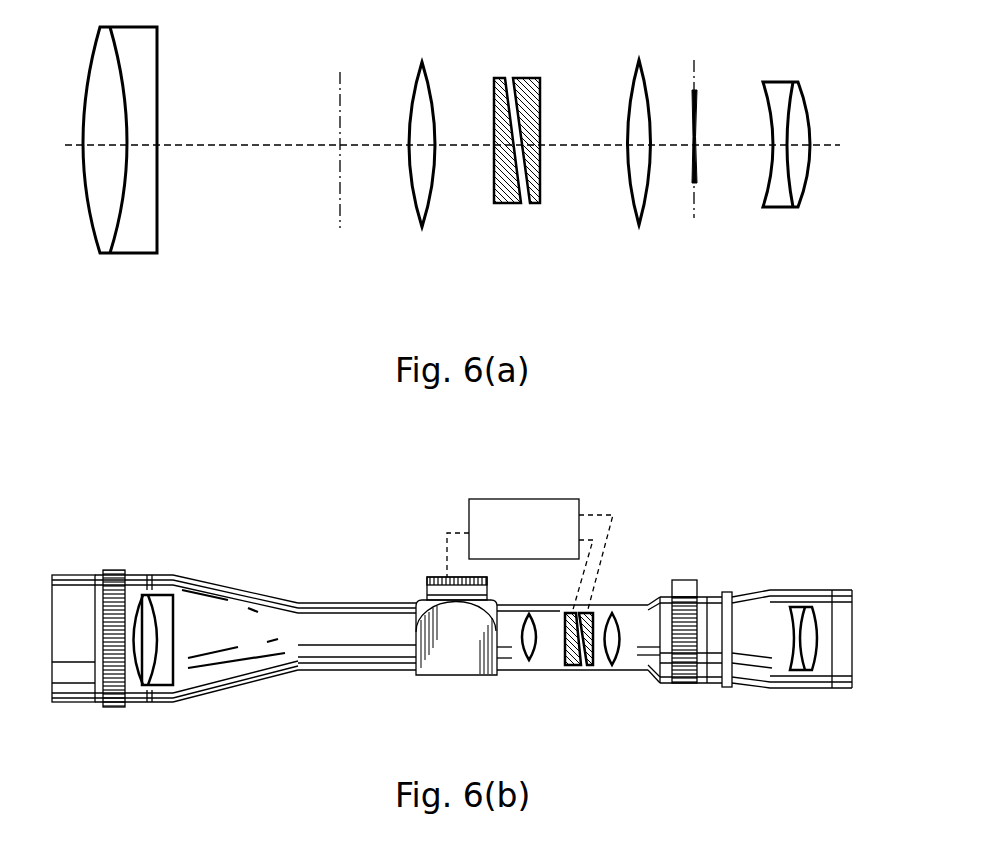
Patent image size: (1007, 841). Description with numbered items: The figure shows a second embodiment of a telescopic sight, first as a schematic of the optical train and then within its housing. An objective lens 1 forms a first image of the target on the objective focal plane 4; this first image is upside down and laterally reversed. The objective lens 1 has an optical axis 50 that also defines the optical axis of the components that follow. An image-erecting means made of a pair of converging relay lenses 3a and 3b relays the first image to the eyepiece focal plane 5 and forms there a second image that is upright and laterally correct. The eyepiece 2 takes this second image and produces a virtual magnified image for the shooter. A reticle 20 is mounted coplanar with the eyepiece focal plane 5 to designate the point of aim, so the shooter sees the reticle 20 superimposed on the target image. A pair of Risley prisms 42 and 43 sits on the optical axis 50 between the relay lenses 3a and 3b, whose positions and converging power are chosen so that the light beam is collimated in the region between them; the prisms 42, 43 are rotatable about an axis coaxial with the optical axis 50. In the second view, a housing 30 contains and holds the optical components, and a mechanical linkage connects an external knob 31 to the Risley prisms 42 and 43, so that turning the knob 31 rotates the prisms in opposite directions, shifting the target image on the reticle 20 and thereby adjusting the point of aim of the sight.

In FIG. 6A, the objective lens 1 is at (160, 230).
In FIG. 6B, the objective lens 1 is at (153, 687).
In FIG. 6A, the eyepiece 2 is at (780, 207).
In FIG. 6B, the eyepiece 2 is at (800, 672).
In FIG. 6A, the converging lens 3a is at (418, 215).
In FIG. 6B, the converging lens 3a is at (527, 660).
In FIG. 6A, the converging lens 3b is at (632, 200).
In FIG. 6B, the converging lens 3b is at (612, 665).
In FIG. 6A, the objective focal plane 4 is at (339, 100).
In FIG. 6A, the eyepiece focal plane 5 is at (694, 210).
In FIG. 6A, the reticle 20 is at (695, 95).
In FIG. 6B, the housing 30 is at (253, 592).
In FIG. 6B, the external knob 31 is at (428, 577).
In FIG. 6A, the Risley prism 42 is at (503, 205).
In FIG. 6B, the Risley prism 42 is at (560, 668).
In FIG. 6A, the Risley prism 43 is at (535, 205).
In FIG. 6B, the Risley prism 43 is at (587, 667).
In FIG. 6A, the optical axis 50 is at (170, 145).